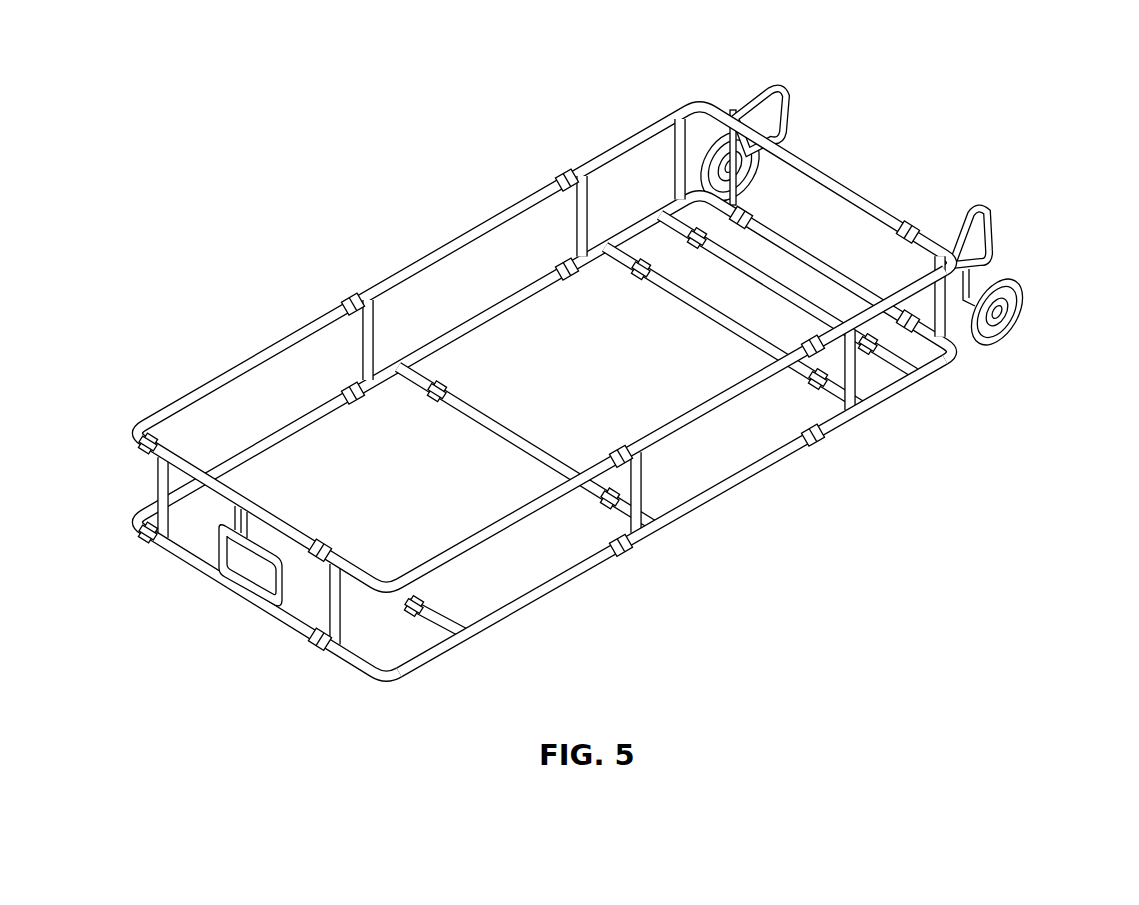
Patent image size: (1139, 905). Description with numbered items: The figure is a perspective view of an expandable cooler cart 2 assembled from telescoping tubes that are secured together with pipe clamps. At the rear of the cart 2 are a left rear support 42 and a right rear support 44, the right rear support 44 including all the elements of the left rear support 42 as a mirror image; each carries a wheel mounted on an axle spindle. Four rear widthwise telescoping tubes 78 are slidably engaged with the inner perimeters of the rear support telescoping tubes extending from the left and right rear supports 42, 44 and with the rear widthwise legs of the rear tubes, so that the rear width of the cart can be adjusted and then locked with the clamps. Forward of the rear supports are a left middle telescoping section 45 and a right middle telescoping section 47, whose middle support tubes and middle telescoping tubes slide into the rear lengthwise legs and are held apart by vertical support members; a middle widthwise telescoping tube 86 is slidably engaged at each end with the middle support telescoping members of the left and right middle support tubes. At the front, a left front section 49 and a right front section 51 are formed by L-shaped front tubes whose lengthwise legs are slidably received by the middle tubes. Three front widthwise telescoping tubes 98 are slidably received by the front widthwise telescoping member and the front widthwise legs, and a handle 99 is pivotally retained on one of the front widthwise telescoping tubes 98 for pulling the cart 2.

The expandable cooler cart 2 is at (601, 408).
The left rear support 42 is at (1022, 242).
The right rear support 44 is at (740, 82).
The left middle telescoping section 45 is at (742, 518).
The right middle telescoping section 47 is at (432, 212).
The left front section 49 is at (544, 367).
The right front section 51 is at (513, 447).
The rear widthwise telescoping tube 78 is at (833, 170).
The middle widthwise telescoping tube 86 is at (481, 403).
The front widthwise telescoping tube 98 is at (273, 620).
The handle 99 is at (235, 590).